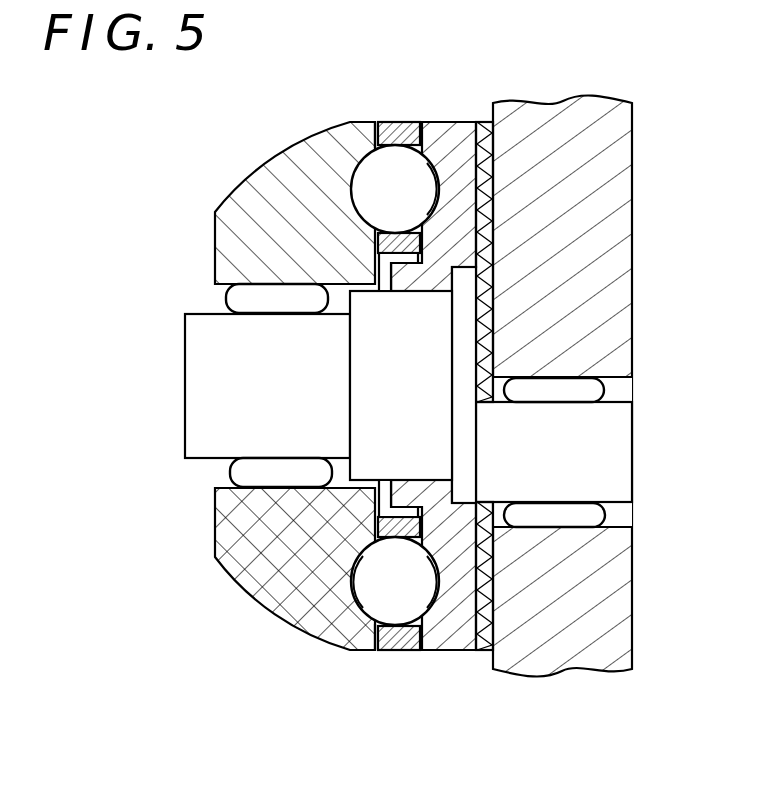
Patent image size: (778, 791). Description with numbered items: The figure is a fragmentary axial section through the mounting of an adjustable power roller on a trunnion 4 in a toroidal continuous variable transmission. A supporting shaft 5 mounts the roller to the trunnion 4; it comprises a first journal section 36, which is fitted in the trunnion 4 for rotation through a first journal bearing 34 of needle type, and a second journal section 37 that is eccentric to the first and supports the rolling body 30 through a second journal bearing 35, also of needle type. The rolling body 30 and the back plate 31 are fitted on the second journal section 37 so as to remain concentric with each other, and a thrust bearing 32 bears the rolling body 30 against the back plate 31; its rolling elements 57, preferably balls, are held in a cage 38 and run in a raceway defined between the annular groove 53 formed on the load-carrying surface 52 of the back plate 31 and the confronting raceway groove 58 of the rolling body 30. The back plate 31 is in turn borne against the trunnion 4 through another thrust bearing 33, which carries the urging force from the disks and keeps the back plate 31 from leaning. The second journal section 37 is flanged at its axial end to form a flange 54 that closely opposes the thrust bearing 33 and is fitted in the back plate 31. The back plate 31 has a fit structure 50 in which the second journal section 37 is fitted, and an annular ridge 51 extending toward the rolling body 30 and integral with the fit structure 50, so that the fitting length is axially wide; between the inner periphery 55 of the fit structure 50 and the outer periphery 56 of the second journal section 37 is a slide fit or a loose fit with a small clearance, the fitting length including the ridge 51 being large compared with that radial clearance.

The trunnion 4 is at (580, 162).
The supporting shaft 5 is at (590, 385).
The rolling body 30 is at (253, 386).
The back plate 31 is at (563, 415).
The thrust bearing 32 is at (356, 148).
The thrust bearing 33 is at (485, 218).
The first journal bearing 34 is at (590, 390).
The second journal bearing 35 is at (243, 300).
The first journal section 36 is at (590, 457).
The second journal section 37 is at (388, 367).
The cage 38 is at (401, 387).
The fit structure 50 is at (285, 203).
The annular ridge 51 is at (400, 272).
The load-carrying surface 52 is at (409, 128).
The annular groove 53 is at (440, 137).
The flange 54 is at (463, 347).
The inner periphery 55 is at (420, 295).
The outer periphery 56 is at (455, 260).
The rolling elements 57 is at (377, 195).
The raceway groove 58 is at (383, 592).